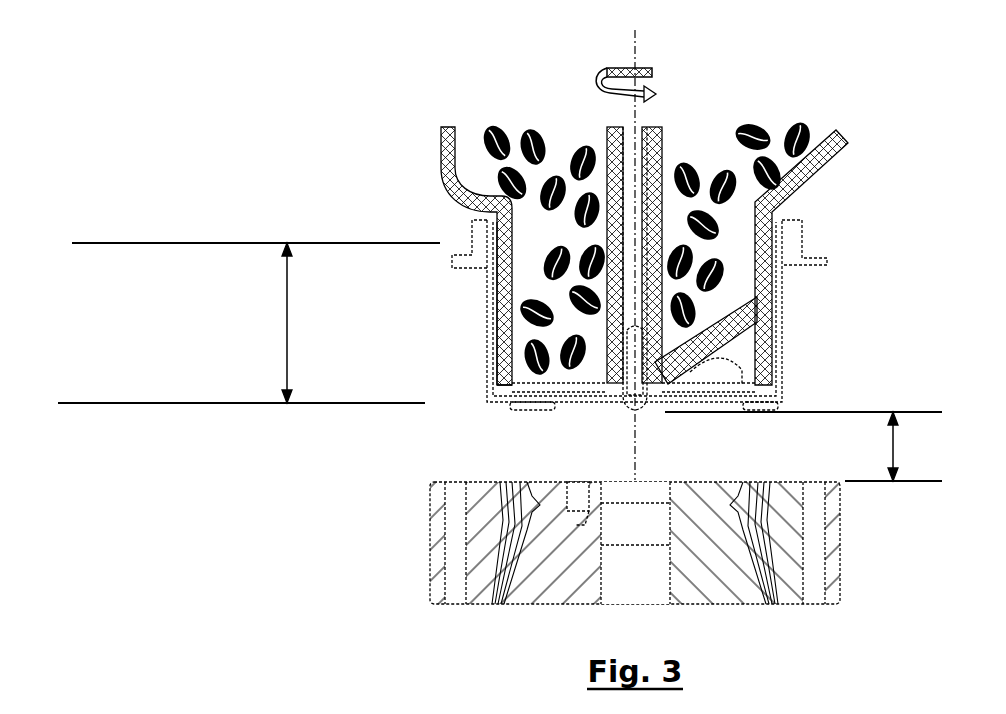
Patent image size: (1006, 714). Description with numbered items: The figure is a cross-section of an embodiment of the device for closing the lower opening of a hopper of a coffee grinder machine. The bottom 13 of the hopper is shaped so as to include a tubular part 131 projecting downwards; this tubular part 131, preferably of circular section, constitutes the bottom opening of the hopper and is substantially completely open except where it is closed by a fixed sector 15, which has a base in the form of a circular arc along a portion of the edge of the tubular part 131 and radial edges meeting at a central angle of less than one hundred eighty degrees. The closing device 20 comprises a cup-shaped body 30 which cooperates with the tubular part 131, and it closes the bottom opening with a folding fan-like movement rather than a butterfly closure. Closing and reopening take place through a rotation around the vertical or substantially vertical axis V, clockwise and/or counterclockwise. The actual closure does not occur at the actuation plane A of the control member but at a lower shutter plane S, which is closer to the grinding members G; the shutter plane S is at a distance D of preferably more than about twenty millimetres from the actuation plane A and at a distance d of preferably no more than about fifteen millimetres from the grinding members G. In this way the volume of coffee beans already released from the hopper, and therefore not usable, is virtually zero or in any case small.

The bottom of the hopper 13 is at (441, 165).
The closing device 20 is at (428, 231).
The cup-shaped body 30 is at (487, 332).
The tubular part 131 is at (765, 220).
The fixed sector 15 is at (713, 332).
The vertical axis V is at (626, 70).
The actuation plane A is at (239, 245).
The shutter plane S is at (229, 405).
The distance between shutter plane and actuation plane D is at (277, 323).
The distance between shutter plane and grinding members d is at (903, 446).
The grinding members G is at (372, 523).